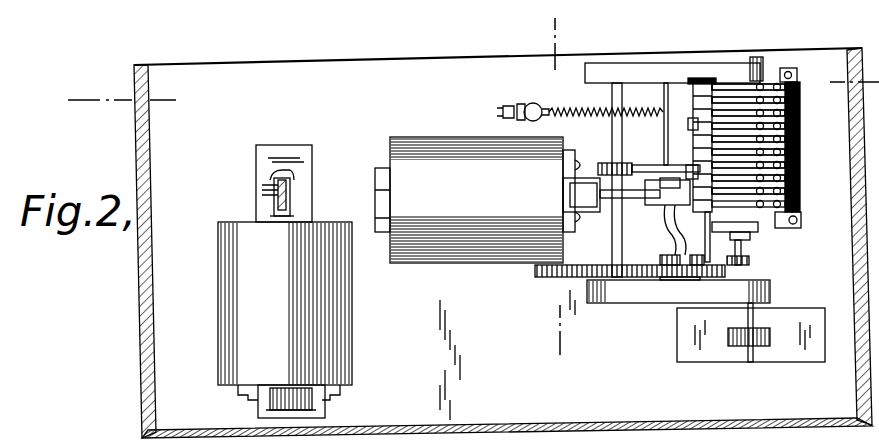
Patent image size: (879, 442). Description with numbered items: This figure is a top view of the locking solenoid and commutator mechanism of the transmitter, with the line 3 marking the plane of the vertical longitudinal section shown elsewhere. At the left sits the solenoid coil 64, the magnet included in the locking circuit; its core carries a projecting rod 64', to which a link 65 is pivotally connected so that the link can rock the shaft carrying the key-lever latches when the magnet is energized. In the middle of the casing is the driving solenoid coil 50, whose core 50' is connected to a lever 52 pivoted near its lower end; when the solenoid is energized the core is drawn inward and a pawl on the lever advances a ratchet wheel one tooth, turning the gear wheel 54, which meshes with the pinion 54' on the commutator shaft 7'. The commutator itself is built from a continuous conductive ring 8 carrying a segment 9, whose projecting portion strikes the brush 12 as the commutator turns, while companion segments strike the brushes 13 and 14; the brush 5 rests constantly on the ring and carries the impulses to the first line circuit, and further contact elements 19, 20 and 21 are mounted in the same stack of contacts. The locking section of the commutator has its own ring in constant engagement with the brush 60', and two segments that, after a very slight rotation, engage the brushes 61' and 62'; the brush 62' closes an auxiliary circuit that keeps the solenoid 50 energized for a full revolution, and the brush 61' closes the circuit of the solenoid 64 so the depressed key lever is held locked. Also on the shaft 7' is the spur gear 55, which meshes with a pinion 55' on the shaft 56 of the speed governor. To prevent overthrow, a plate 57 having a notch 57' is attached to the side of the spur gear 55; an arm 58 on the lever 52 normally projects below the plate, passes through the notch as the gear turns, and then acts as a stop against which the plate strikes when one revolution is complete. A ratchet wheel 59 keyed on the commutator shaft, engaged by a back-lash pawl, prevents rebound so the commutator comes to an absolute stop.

The section line 3— 3 is at (93, 65).
The solenoid coil 64 is at (285, 320).
The link 65 is at (290, 178).
The projecting rod 64' is at (310, 197).
The solenoid coil 50 is at (487, 200).
The lever 52 is at (641, 175).
The segment 9 is at (702, 80).
The brush 12 is at (728, 84).
The brush 13 is at (800, 90).
The brush 14 is at (800, 103).
The brush 5 is at (800, 116).
The terminal plate 19 is at (800, 129).
The terminal plate 20 is at (800, 142).
The terminal plate 21 is at (800, 155).
The brush 62' is at (779, 189).
The brush 61' is at (779, 202).
The brush 60' is at (810, 223).
The continuous ring 8 is at (700, 132).
The arm 58 is at (690, 168).
The core 50' is at (659, 201).
The plate 57 is at (665, 230).
The spur gear 55 is at (656, 248).
The commutator shaft 7' is at (710, 238).
The gear wheel 54 is at (624, 289).
The pinion 54' is at (678, 289).
The notch 57' is at (670, 308).
The ratchet wheel 59 is at (757, 232).
The pinion 55' is at (766, 255).
The shaft 56 is at (758, 306).